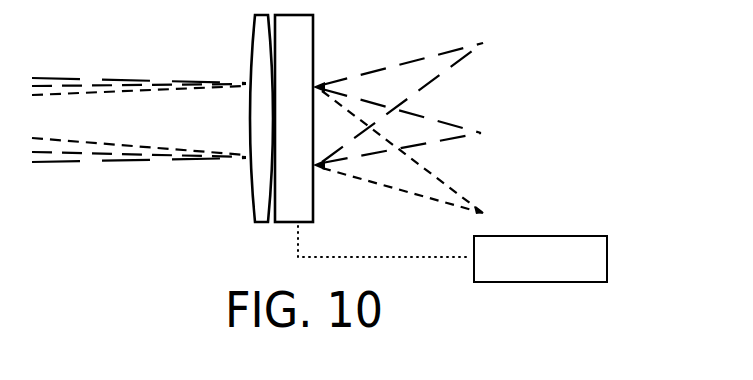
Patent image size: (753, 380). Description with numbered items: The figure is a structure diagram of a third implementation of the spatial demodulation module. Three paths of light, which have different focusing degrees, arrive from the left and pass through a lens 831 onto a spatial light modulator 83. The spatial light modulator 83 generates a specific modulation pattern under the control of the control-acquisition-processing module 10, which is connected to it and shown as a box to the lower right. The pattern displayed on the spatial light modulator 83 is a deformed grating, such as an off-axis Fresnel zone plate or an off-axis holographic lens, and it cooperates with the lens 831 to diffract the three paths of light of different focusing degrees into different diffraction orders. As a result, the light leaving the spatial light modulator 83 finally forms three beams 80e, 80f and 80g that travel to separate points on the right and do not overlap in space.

The lens 831 is at (253, 30).
The spatial light modulator 83 is at (314, 32).
The beam 80e is at (421, 98).
The beam 80f is at (419, 126).
The beam 80g is at (421, 153).
The control-acquisition-processing module 10 is at (608, 262).